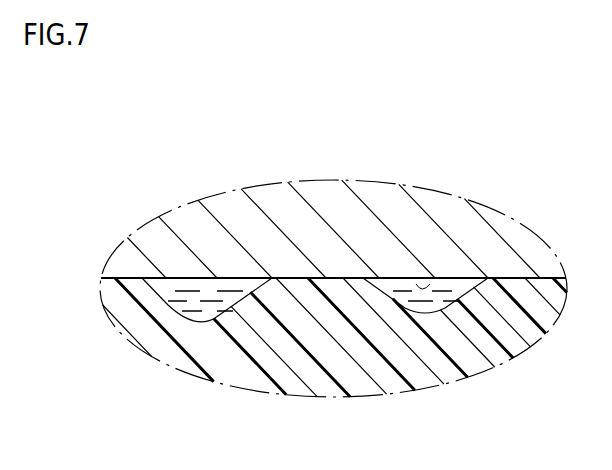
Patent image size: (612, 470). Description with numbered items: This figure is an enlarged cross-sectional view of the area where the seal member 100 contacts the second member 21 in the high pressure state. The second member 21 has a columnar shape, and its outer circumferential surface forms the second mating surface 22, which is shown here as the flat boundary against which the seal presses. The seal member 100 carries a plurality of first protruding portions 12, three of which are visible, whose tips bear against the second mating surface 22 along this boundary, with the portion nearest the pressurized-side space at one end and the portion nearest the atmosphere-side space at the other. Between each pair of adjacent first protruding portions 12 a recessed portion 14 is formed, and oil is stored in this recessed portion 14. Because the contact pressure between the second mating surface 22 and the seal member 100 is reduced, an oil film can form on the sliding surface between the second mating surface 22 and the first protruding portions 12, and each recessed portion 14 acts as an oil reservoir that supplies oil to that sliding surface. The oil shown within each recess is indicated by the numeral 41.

The first protruding portion 12 is at (115, 278).
The recessed portion 14 is at (197, 327).
The second member 21 is at (238, 222).
The second mating surface 22 is at (430, 290).
The filler material 41 is at (197, 317).
The seal member 100 is at (498, 350).